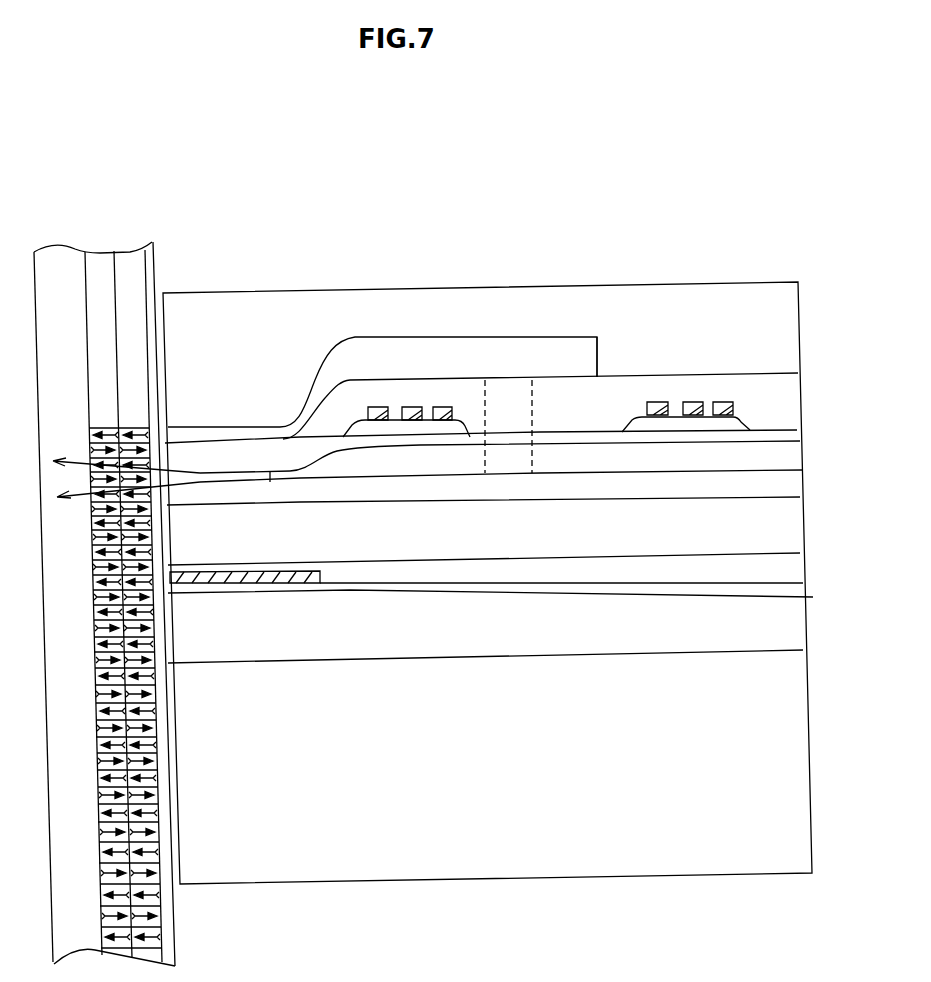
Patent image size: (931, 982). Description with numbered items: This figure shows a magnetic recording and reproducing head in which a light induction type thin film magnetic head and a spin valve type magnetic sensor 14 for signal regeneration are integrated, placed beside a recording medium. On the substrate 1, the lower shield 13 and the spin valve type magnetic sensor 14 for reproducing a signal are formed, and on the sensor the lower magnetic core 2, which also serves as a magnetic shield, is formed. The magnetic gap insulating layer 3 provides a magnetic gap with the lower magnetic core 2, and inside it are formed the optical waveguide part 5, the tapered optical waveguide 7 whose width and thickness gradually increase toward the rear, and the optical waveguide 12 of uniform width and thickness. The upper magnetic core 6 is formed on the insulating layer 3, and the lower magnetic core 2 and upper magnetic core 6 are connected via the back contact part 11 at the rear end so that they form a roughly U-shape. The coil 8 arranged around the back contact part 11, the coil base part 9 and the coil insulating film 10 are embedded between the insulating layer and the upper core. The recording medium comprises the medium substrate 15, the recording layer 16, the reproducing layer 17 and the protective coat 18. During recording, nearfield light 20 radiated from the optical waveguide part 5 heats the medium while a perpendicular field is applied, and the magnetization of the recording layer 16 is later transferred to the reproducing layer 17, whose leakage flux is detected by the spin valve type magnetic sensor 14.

The substrate 1 is at (730, 745).
The lower magnetic core 2 is at (718, 515).
The magnetic gap insulating layer 3 is at (718, 435).
The optical waveguide part 5 is at (236, 480).
The upper magnetic core 6 is at (213, 430).
The tapered optical waveguide 7 is at (325, 367).
The coil 8 is at (380, 415).
The coil base part 9 is at (397, 428).
The coil insulating film 10 is at (428, 406).
The back contact part 11 is at (513, 422).
The optical waveguide 12 is at (690, 350).
The lower shield 13 is at (755, 628).
The spin valve type magnetic sensor 14 is at (510, 589).
The medium substrate 15 is at (60, 280).
The recording layer 16 is at (100, 277).
The reproducing layer 17 is at (128, 275).
The protective coat 18 is at (152, 242).
The nearfield light 20 is at (125, 478).